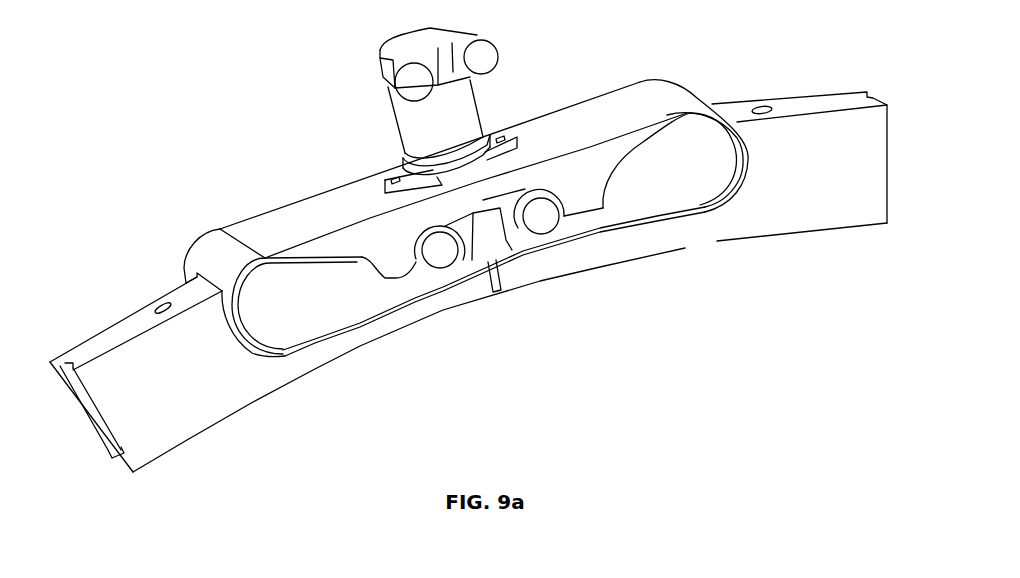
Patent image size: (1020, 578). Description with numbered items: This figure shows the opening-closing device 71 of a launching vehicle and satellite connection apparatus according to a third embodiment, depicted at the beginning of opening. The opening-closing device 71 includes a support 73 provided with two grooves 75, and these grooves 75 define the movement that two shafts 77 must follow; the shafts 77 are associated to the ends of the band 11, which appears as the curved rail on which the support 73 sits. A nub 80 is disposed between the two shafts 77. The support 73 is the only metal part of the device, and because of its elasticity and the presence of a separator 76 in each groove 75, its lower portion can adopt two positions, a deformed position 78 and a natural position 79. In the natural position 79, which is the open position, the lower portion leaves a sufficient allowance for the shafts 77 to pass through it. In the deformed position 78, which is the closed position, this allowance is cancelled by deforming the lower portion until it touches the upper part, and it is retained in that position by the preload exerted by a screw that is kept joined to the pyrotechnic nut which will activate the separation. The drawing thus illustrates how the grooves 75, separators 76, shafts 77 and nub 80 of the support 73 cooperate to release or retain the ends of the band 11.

The band 11 is at (823, 112).
The opening-closing device 71 is at (210, 180).
The support 73 is at (597, 127).
The groove 75 is at (326, 265).
The separator 76 is at (393, 268).
The shaft 77 is at (443, 265).
The deformed position 78 is at (460, 258).
The natural position 79 is at (315, 335).
The nub 80 is at (493, 240).